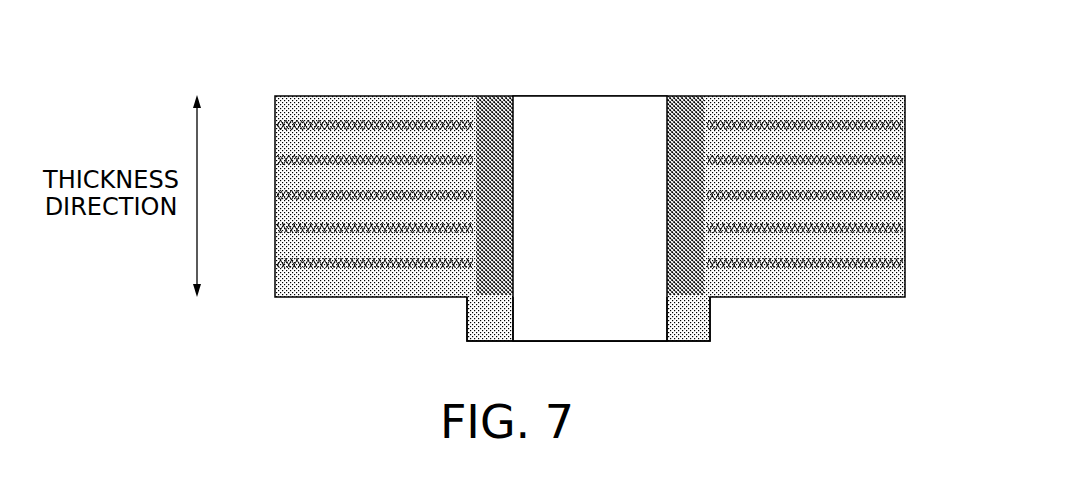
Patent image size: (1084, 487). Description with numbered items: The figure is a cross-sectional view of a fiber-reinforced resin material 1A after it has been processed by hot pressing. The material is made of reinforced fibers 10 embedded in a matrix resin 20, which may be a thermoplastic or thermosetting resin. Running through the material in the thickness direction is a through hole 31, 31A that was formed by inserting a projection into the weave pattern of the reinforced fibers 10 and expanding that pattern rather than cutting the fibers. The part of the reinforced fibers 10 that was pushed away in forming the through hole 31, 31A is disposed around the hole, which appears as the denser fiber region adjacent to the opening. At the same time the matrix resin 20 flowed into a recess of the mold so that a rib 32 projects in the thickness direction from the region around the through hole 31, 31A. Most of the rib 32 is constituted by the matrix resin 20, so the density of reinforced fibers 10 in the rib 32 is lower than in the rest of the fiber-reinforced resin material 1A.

The fiber-reinforced resin material 1A is at (587, 179).
The reinforced fibers 10 is at (493, 106).
The matrix resin 20 is at (390, 106).
The through hole 31 is at (590, 186).
The through hole 31A is at (572, 84).
The rib 32 is at (467, 320).